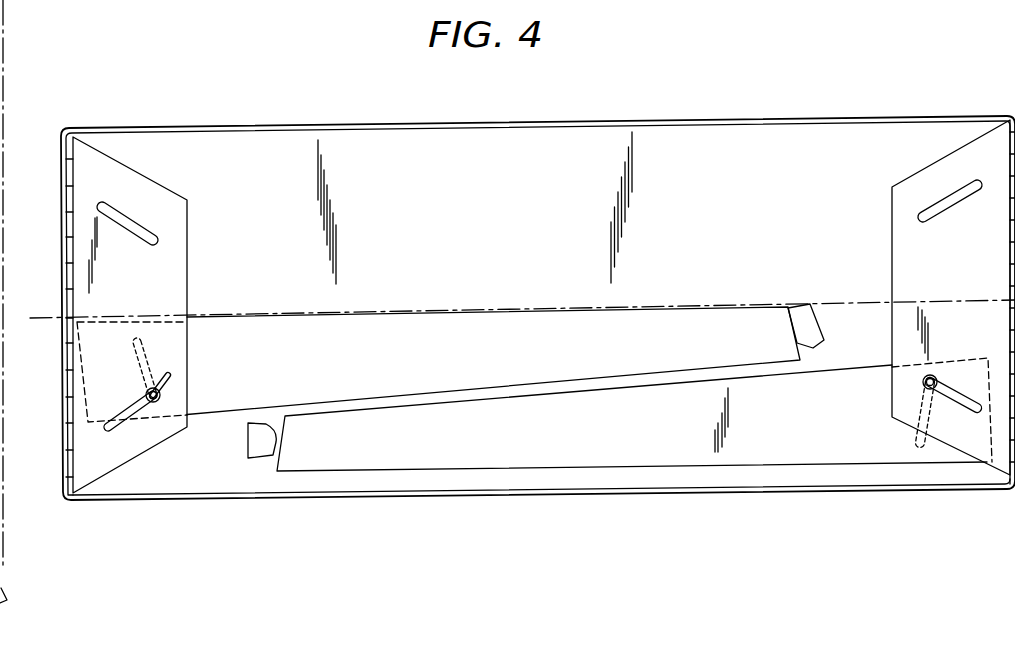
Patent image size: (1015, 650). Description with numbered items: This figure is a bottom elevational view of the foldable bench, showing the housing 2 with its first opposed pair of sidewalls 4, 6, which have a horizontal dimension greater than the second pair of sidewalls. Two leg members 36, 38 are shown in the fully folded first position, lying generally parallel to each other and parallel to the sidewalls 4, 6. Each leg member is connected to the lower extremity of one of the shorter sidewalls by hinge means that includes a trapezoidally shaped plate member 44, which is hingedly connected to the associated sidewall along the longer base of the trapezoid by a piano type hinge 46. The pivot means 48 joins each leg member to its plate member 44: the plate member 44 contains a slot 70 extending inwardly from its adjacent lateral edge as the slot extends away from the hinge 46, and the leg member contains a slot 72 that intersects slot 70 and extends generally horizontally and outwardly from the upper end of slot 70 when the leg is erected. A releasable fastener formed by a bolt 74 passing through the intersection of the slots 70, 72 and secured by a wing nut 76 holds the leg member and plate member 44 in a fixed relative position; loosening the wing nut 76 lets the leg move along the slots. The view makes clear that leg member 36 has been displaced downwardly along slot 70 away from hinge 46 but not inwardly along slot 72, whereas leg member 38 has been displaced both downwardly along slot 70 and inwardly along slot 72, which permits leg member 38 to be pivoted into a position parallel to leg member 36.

The housing 2 is at (853, 490).
The sidewall 4 is at (646, 119).
The sidewall 6 is at (631, 493).
The leg member 36 is at (845, 450).
The leg member 38 is at (453, 325).
The plate member 44 is at (155, 292).
The piano type hinge 46 is at (73, 505).
The pivot means 48 is at (165, 409).
The slot 70 is at (136, 416).
The slot 72 is at (144, 364).
The bolt 74 is at (147, 391).
The wing nut 76 is at (164, 383).